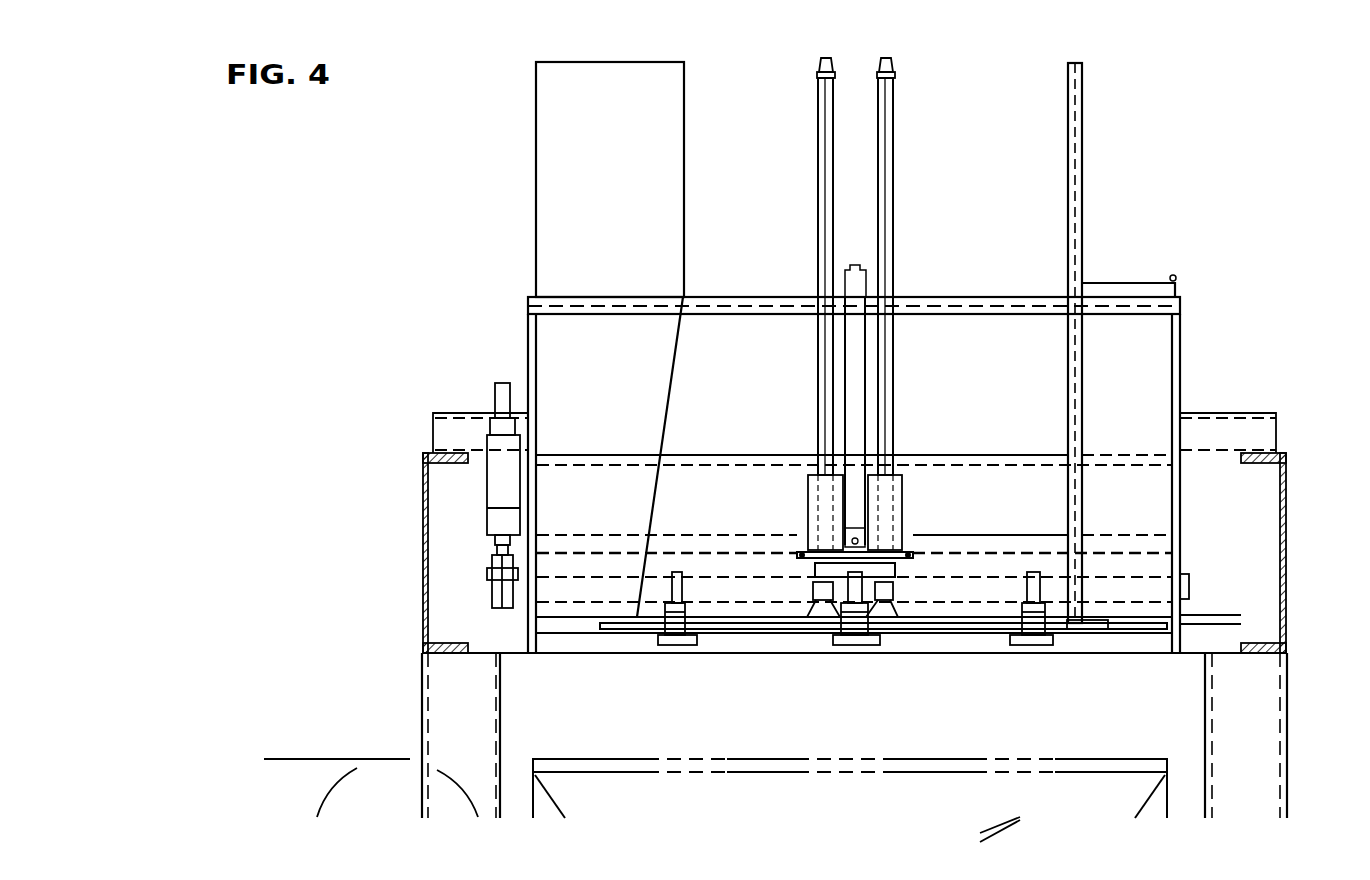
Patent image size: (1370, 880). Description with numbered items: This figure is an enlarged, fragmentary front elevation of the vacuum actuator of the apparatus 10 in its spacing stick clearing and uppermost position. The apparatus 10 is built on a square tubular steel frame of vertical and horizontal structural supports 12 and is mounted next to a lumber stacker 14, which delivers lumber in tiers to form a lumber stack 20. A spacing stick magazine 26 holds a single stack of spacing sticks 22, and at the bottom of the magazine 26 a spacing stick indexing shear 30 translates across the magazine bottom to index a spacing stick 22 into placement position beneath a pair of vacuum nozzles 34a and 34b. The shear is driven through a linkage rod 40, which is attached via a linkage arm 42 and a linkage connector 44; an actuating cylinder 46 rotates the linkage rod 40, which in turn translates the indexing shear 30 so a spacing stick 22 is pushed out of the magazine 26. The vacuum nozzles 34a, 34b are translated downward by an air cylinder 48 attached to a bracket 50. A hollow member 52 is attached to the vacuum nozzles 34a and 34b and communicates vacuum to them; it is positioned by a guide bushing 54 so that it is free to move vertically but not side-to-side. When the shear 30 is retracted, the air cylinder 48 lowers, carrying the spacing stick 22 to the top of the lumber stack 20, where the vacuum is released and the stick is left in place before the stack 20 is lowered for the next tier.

The apparatus 10 is at (1293, 215).
The structural supports 12 is at (1252, 745).
The lumber stacker 14 is at (333, 758).
The lumber stack 20 is at (998, 821).
The spacing sticks 22 is at (1143, 628).
The spacing stick magazine 26 is at (570, 233).
The spacing stick indexing shear 30 is at (758, 630).
The vacuum nozzle 34a is at (823, 615).
The vacuum nozzle 34b is at (885, 615).
The linkage rod 40 is at (962, 595).
The linkage arm 42 is at (680, 592).
The linkage connector 44 is at (668, 600).
The actuating cylinder 46 is at (503, 498).
The air cylinder 48 is at (853, 397).
The bracket 50 is at (808, 572).
The hollow member 52 is at (824, 57).
The guide bushing 54 is at (883, 502).